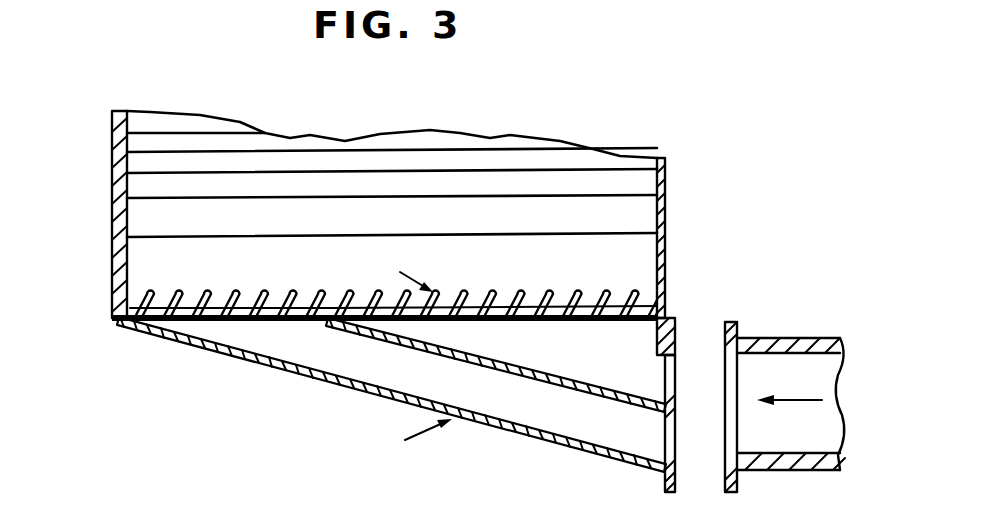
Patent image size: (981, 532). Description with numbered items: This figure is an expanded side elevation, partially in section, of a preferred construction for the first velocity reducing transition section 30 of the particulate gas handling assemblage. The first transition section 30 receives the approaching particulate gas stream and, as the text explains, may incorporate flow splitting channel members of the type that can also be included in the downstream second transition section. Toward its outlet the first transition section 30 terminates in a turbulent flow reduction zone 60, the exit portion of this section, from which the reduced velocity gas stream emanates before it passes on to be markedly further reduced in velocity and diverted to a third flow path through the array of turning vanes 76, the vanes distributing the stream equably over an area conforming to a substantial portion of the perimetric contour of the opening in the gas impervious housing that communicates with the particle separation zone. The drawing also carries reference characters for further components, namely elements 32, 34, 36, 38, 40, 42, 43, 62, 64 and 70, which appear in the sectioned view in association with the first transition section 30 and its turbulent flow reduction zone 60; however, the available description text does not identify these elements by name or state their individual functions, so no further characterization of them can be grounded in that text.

The first transition section 30 is at (406, 438).
The outlet panel 32 is at (678, 360).
The exhaust duct 34 is at (767, 337).
The air flow through louvers 36 is at (404, 267).
The lower deflector plate 38 is at (398, 366).
The upper deflector plate 40 is at (573, 374).
The louvers 42 is at (232, 302).
The louver opening 43 is at (592, 292).
The turbulent flow reduction zone 60 is at (546, 273).
The side wall 62 is at (112, 290).
The inlet chamber 64 is at (147, 262).
The bottom plate 70 is at (588, 223).
The array of turning vanes 76 is at (513, 140).